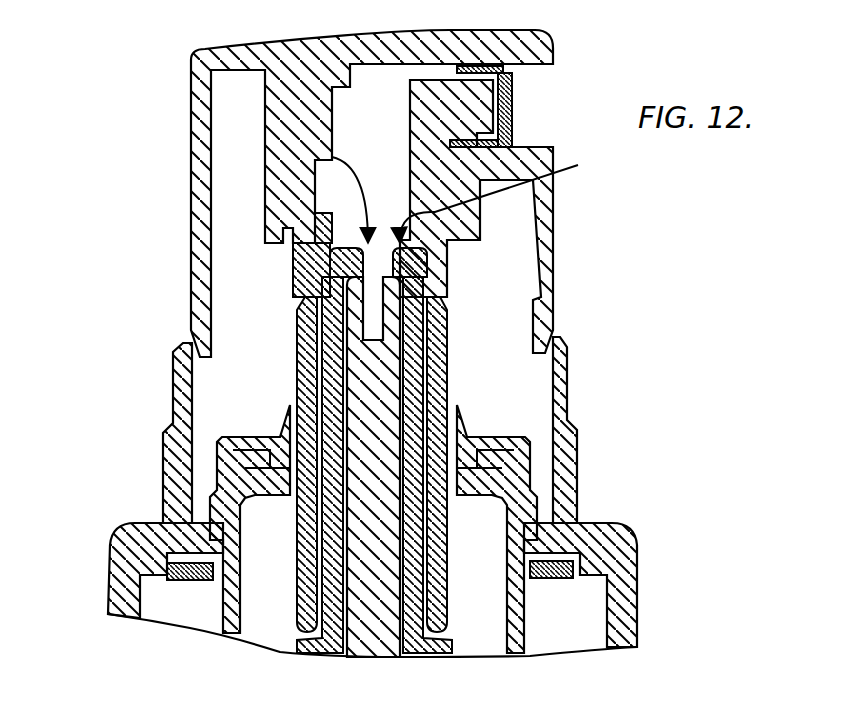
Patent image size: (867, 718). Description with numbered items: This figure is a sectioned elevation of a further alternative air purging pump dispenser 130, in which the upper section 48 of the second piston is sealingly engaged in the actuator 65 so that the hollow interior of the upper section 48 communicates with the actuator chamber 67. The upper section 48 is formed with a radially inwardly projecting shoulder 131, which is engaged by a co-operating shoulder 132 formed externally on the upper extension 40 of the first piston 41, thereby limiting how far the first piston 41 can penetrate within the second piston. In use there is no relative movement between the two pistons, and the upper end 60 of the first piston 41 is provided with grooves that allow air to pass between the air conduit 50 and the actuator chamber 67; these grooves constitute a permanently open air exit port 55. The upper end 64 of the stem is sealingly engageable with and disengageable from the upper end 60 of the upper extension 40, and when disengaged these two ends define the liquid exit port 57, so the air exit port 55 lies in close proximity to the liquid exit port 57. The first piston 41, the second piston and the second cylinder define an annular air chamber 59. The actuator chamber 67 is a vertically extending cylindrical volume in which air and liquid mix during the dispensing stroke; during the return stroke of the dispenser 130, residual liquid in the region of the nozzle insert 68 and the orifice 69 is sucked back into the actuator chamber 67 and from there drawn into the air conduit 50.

The upper extension 40 is at (410, 328).
The first piston 41 is at (410, 452).
The upper section 48 is at (297, 312).
The air conduit 50 is at (330, 380).
The air exit port 55 is at (509, 216).
The liquid exit port 57 is at (332, 157).
The annular air chamber 59 is at (262, 553).
The upper end 60 is at (335, 218).
The upper end 64 is at (375, 298).
The actuator 65 is at (142, 173).
The actuator chamber 67 is at (350, 117).
The nozzle insert 68 is at (510, 68).
The orifice 69 is at (513, 105).
The dispenser 130 is at (146, 406).
The radially inwardly projecting shoulder 131 is at (327, 263).
The co-operating shoulder 132 is at (425, 265).